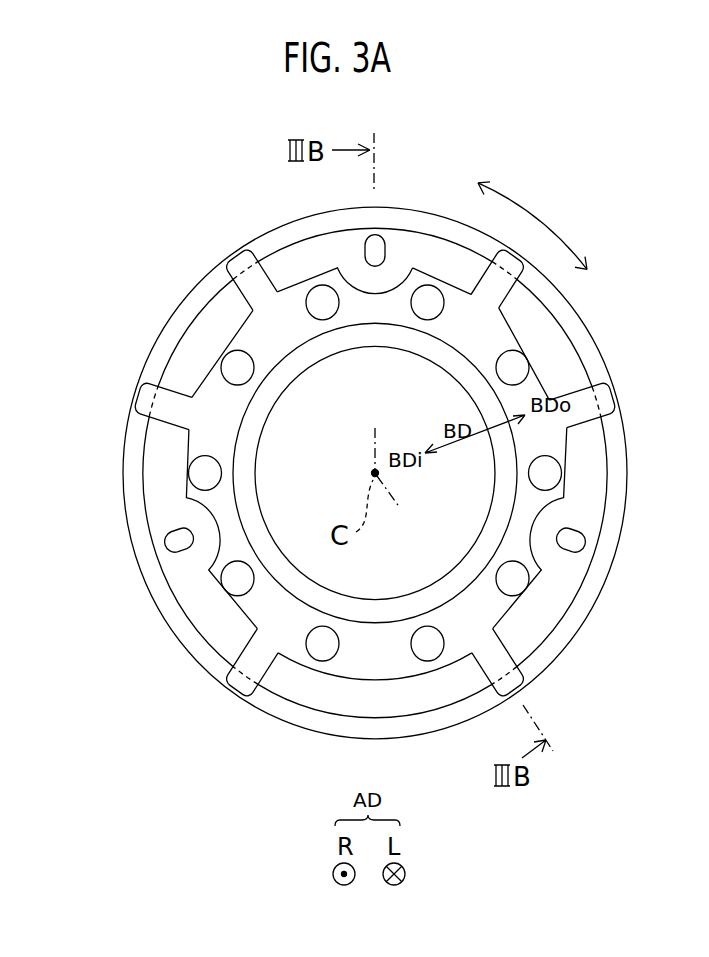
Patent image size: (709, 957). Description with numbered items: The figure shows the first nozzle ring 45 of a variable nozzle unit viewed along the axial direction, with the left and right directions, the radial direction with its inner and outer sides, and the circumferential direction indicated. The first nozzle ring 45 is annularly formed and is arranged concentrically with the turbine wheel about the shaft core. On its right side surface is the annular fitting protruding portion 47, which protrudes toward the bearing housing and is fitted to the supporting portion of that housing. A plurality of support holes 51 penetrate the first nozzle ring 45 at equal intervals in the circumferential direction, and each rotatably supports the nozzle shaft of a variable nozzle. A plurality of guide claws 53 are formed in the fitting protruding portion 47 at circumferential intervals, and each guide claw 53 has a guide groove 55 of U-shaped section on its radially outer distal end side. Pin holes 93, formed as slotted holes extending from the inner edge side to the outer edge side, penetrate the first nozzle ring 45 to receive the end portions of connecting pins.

The first nozzle ring 45 is at (414, 155).
The fitting protruding portion 47 is at (375, 658).
The support holes 51 is at (243, 370).
The guide claws 53 is at (238, 258).
The guide groove 55 is at (229, 266).
The pin holes 93 is at (382, 252).